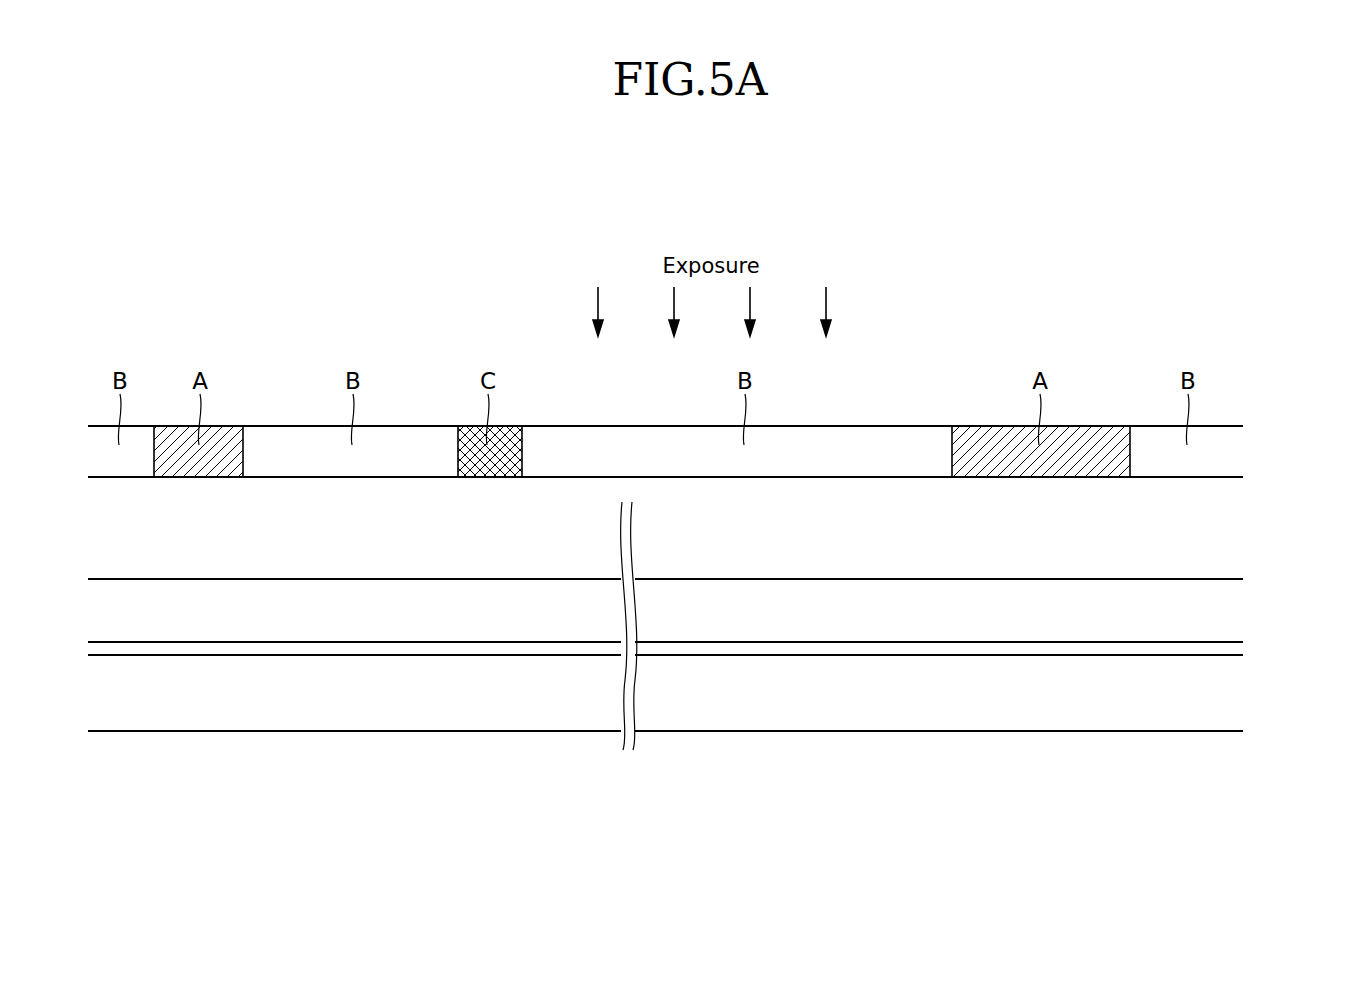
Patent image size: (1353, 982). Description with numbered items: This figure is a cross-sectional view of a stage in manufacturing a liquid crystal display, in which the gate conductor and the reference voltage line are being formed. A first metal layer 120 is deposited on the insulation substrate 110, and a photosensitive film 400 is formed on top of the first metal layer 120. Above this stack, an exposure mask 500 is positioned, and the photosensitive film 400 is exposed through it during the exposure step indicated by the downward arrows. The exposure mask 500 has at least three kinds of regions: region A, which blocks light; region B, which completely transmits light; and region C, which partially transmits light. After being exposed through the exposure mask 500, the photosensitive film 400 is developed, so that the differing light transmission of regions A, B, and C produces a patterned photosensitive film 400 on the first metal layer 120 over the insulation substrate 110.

The exposure mask 500 is at (1222, 421).
The photosensitive film 400 is at (957, 620).
The first metal layer 120 is at (845, 648).
The insulation substrate 110 is at (758, 700).